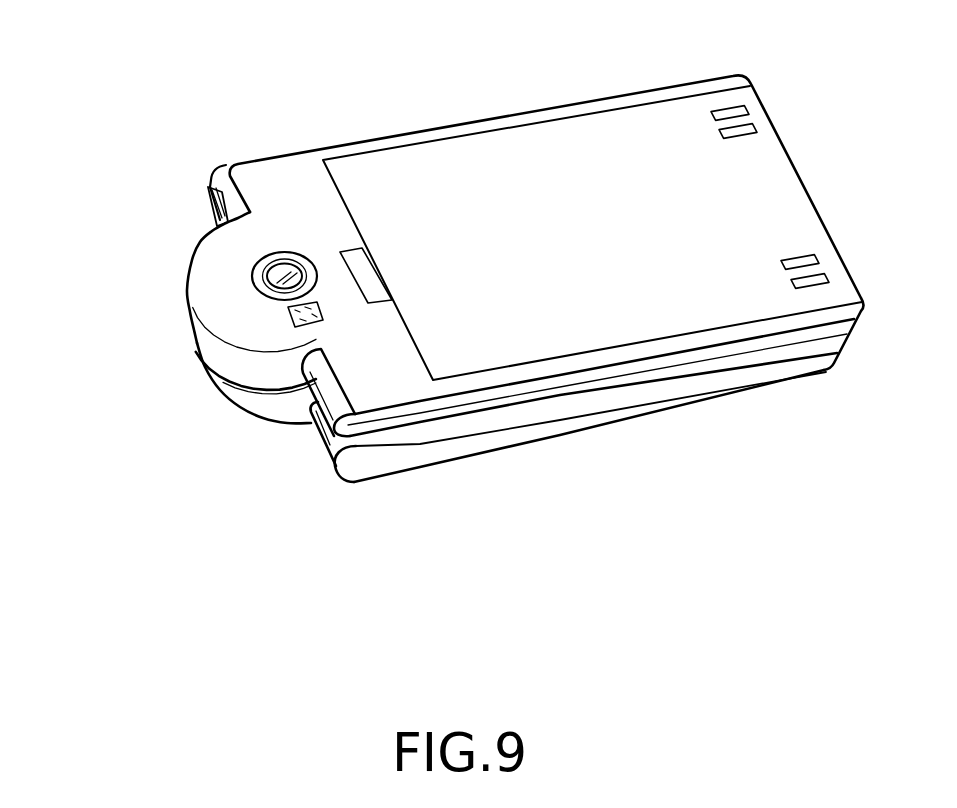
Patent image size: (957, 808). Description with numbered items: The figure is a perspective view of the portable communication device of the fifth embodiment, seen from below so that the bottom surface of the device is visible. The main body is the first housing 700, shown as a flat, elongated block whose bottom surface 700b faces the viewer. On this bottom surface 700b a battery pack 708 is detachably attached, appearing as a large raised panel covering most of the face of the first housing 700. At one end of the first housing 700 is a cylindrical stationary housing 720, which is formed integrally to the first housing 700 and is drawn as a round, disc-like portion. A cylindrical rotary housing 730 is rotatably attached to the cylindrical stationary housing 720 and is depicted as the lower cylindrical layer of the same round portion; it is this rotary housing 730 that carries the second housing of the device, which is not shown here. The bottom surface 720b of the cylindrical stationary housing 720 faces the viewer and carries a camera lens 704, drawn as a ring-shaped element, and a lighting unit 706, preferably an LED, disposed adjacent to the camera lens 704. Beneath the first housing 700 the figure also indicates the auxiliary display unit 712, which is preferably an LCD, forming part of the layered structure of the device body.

The first housing 700 is at (563, 392).
The bottom surface of the first housing 700b is at (376, 400).
The camera lens 704 is at (283, 272).
The lighting unit 706 is at (293, 311).
The battery pack 708 is at (548, 142).
The auxiliary display unit 712 is at (485, 438).
The cylindrical stationary housing 720 is at (256, 367).
The bottom surface of the cylindrical stationary housing 720b is at (203, 268).
The cylindrical rotary housing 730 is at (273, 407).